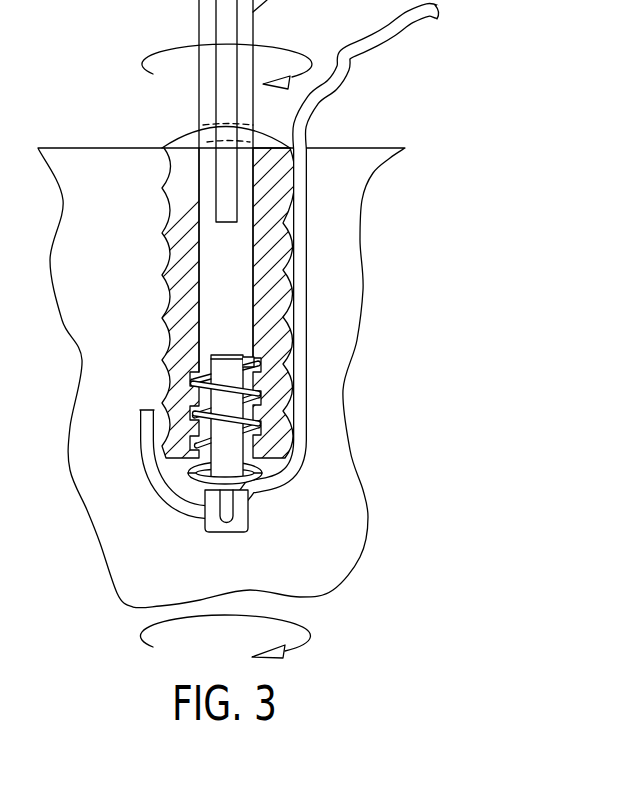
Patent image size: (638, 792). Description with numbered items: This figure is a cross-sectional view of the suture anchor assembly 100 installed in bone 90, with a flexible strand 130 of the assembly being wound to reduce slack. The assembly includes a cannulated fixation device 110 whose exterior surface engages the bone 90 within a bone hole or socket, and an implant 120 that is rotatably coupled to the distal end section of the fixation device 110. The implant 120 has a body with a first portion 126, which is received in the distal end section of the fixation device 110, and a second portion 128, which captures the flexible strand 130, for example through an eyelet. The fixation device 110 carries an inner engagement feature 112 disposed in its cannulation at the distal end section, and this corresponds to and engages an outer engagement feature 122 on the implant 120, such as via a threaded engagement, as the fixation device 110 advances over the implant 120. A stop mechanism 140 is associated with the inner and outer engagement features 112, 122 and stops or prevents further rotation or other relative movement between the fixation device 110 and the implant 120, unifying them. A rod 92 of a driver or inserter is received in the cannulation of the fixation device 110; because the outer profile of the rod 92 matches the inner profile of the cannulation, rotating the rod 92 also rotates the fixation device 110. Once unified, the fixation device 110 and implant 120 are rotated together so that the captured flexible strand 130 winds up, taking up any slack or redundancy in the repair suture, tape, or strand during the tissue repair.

The bone 90 is at (117, 433).
The rod 92 is at (230, 217).
The suture anchor assembly 100 is at (118, 134).
The cannulated fixation device 110 is at (273, 270).
The inner engagement feature 112 is at (167, 438).
The implant 120 is at (262, 510).
The outer engagement feature 122 is at (287, 373).
The first portion 126 is at (275, 344).
The second portion 128 is at (207, 510).
The flexible strand 130 is at (367, 57).
The stop mechanism 140 is at (250, 353).